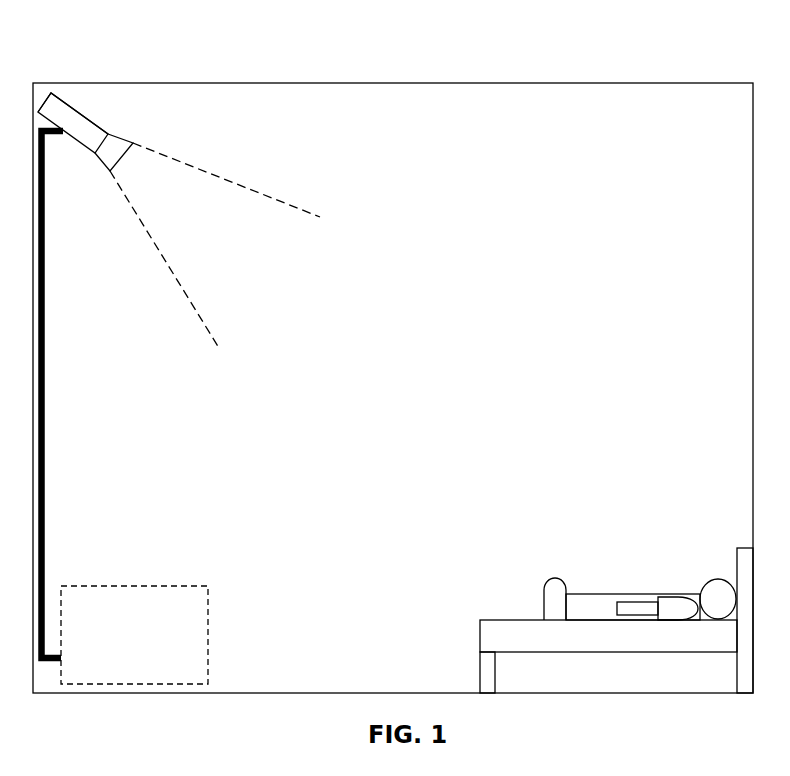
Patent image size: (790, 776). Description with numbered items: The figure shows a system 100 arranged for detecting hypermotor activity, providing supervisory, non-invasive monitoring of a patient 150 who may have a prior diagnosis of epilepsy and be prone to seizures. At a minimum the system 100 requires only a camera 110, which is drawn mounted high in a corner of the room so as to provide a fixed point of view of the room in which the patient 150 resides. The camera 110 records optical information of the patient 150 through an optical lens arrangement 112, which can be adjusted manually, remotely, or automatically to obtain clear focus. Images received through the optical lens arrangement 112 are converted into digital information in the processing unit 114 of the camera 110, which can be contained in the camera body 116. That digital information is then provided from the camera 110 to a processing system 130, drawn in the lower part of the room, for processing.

The system 100 is at (313, 112).
The camera 110 is at (175, 180).
The optical lens arrangement 112 is at (100, 162).
The processing unit 114 is at (60, 96).
The camera body 116 is at (92, 126).
The processing system 130 is at (186, 589).
The patient 150 is at (642, 593).